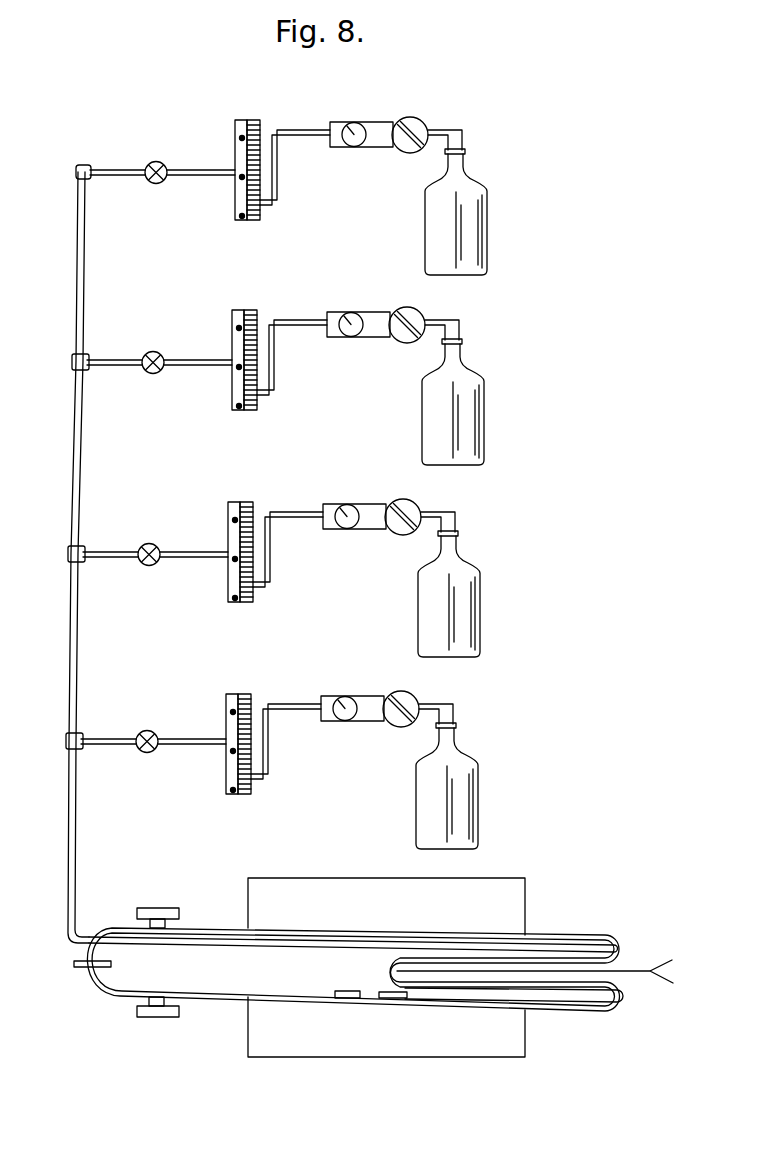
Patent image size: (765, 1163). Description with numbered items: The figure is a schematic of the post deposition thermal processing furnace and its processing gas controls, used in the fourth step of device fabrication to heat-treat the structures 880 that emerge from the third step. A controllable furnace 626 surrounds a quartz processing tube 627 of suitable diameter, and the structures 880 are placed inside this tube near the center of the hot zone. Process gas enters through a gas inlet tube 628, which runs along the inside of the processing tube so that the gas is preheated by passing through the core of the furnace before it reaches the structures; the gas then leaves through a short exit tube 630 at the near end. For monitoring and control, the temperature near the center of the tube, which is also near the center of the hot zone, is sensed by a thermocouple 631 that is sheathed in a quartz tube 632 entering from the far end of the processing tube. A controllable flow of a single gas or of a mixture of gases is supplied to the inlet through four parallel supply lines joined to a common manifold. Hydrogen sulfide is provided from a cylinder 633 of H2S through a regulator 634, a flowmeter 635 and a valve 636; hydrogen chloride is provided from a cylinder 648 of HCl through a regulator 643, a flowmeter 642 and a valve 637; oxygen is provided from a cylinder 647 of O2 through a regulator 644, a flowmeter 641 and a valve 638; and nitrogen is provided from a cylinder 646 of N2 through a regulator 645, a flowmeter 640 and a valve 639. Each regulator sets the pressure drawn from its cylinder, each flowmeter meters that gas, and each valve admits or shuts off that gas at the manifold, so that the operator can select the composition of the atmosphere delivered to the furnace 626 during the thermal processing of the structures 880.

The controllable furnace 626 is at (533, 1047).
The quartz processing tube 627 is at (618, 937).
The gas inlet tube 628 is at (253, 945).
The short exit tube 630 is at (87, 968).
The thermocouple 631 is at (677, 947).
The quartz tube 632 is at (574, 984).
The cylinder of H2S 633 is at (467, 743).
The regulator 634 is at (393, 693).
The flowmeter 635 is at (227, 702).
The valve 636 is at (148, 731).
The valve 637 is at (148, 543).
The valve 638 is at (153, 374).
The valve 639 is at (156, 184).
The flowmeter 640 is at (238, 136).
The flowmeter 641 is at (233, 318).
The flowmeter 642 is at (253, 503).
The regulator 643 is at (397, 502).
The regulator 644 is at (398, 312).
The regulator 645 is at (424, 121).
The cylinder of N2 646 is at (485, 184).
The cylinder of O2 647 is at (465, 356).
The cylinder of HCl 648 is at (470, 552).
The structure 880 is at (384, 991).